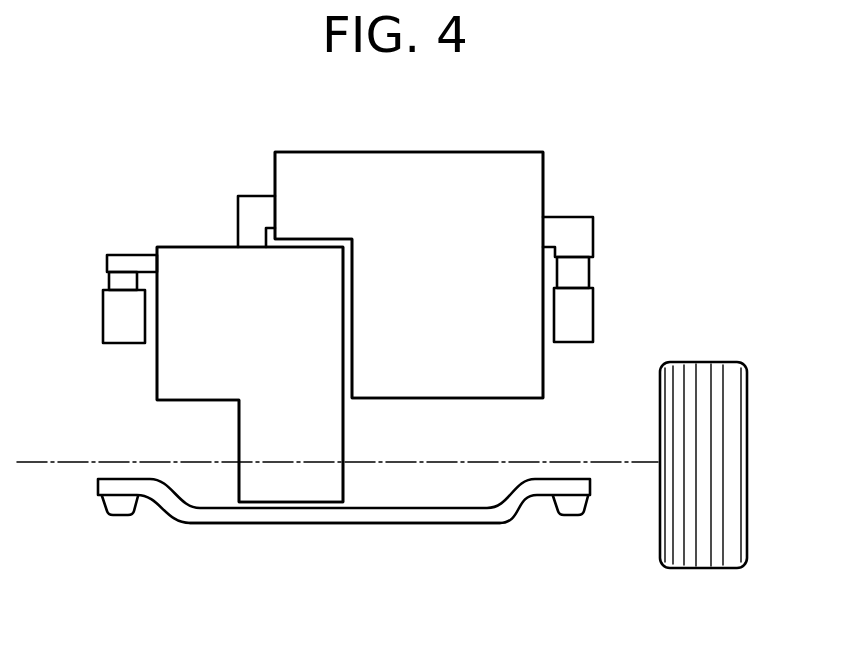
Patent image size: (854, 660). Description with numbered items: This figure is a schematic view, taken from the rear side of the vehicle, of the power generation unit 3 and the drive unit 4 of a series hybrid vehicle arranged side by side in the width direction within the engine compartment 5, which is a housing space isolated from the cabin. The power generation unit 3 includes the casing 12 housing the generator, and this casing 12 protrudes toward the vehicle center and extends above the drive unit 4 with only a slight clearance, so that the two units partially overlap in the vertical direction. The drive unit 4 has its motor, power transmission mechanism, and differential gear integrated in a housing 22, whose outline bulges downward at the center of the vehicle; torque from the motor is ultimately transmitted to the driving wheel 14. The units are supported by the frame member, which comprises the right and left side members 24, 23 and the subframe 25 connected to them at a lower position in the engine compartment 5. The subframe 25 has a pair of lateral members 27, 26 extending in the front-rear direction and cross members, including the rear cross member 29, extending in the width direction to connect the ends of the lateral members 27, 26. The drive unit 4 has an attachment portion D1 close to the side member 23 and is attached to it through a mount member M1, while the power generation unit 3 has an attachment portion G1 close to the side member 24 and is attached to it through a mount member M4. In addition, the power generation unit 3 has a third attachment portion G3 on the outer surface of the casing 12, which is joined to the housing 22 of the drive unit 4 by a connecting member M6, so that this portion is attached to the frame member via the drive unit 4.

The power generation unit 3 is at (409, 166).
The casing 12 is at (275, 165).
The third attachment portion G3 is at (280, 217).
The connecting member M6 is at (243, 210).
The housing 22 is at (180, 256).
The drive unit 4 is at (273, 350).
The attachment portion D1 is at (115, 254).
The mount member M1 is at (117, 282).
The side member 23 is at (103, 333).
The attachment portion G1 is at (580, 214).
The mount member M4 is at (582, 275).
The side member 24 is at (585, 319).
The driving wheel 14 is at (703, 362).
The engine compartment 5 is at (458, 488).
The rear cross member 29 is at (298, 517).
The lateral member 26 is at (117, 510).
The lateral member 27 is at (568, 505).
The subframe 25 is at (237, 554).